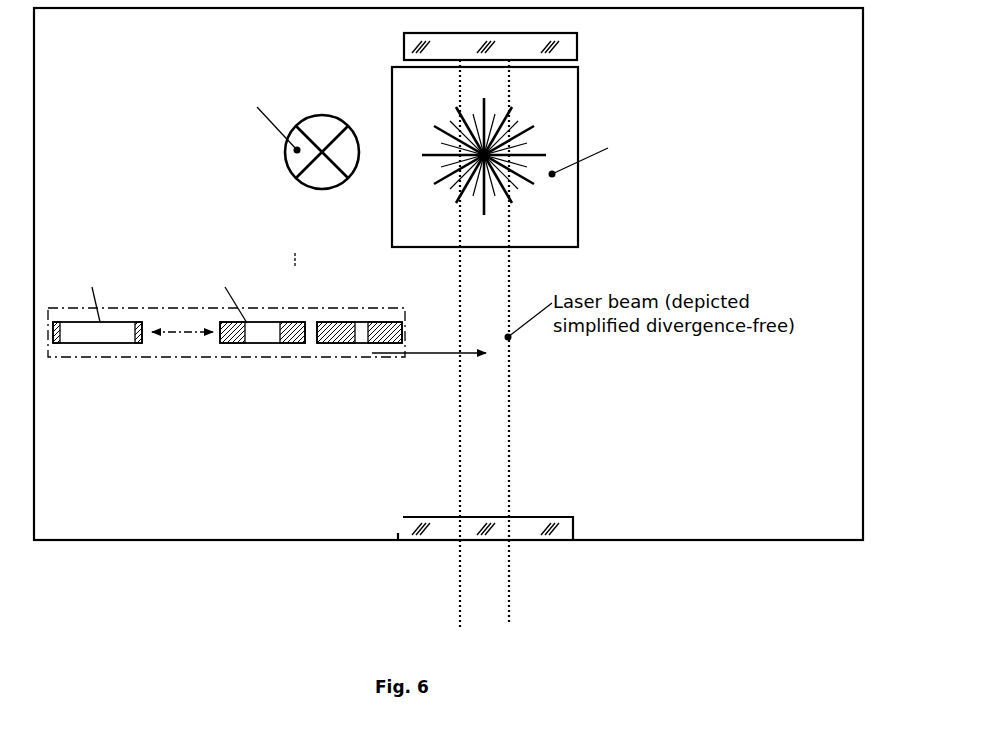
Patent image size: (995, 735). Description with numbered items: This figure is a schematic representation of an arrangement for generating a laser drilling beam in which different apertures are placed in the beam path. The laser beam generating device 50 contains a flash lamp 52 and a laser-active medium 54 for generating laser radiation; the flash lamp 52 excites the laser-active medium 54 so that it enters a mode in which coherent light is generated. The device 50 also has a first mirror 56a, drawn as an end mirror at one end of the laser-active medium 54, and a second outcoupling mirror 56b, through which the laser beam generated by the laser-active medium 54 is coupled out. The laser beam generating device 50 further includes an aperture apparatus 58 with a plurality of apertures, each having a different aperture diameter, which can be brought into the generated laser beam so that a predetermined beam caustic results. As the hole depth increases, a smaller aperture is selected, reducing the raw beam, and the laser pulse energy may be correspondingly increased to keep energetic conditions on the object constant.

The laser beam generating device 50 is at (112, 540).
The flash lamp 52 is at (310, 178).
The laser-active medium 54 is at (565, 222).
The first mirror 56a is at (578, 47).
The second outcoupling mirror 56b is at (562, 525).
The aperture apparatus 58 is at (155, 357).